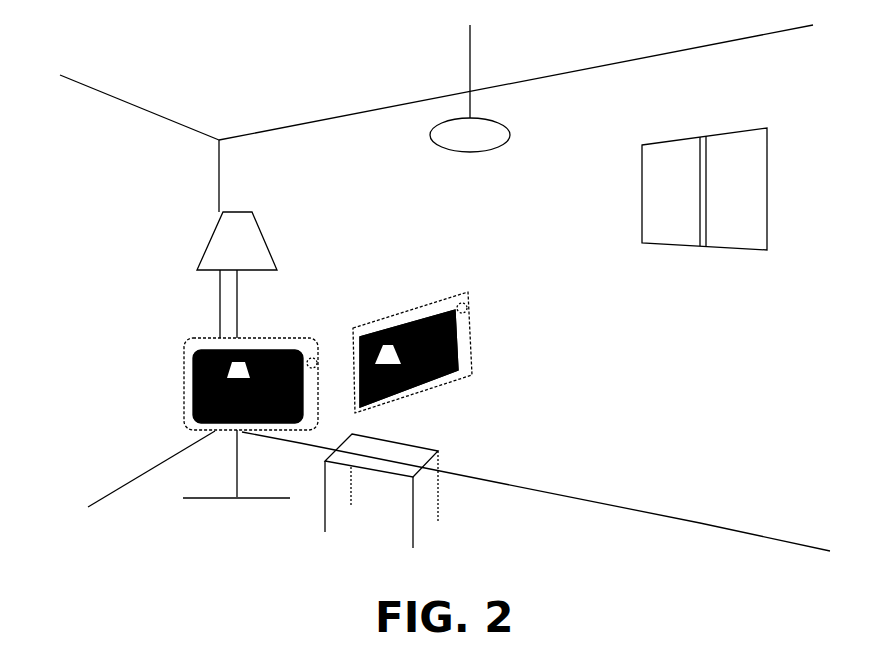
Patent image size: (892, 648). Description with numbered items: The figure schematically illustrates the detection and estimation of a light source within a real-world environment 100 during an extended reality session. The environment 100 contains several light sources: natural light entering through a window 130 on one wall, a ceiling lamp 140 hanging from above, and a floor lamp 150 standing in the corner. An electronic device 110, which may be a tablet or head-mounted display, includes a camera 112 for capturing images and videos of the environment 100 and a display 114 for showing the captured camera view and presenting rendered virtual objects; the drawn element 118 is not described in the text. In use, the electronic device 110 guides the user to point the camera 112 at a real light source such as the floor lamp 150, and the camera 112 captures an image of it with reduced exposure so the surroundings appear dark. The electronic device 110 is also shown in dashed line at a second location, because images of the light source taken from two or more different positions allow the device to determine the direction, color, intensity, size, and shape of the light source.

The environment 100 is at (82, 41).
The electronic device 110 is at (434, 345).
The camera 112 is at (470, 302).
The display 114 is at (448, 383).
The display 118 is at (412, 388).
The window 130 is at (768, 148).
The ceiling lamp 140 is at (510, 135).
The floor lamp 150 is at (267, 243).